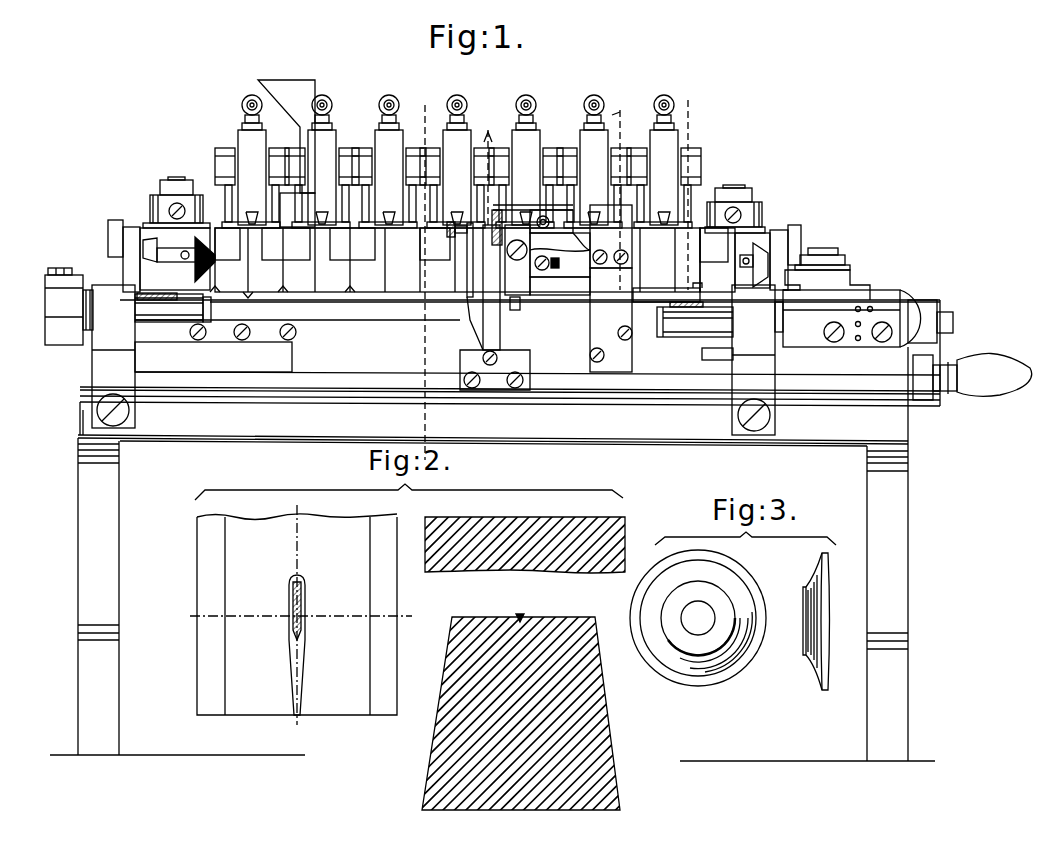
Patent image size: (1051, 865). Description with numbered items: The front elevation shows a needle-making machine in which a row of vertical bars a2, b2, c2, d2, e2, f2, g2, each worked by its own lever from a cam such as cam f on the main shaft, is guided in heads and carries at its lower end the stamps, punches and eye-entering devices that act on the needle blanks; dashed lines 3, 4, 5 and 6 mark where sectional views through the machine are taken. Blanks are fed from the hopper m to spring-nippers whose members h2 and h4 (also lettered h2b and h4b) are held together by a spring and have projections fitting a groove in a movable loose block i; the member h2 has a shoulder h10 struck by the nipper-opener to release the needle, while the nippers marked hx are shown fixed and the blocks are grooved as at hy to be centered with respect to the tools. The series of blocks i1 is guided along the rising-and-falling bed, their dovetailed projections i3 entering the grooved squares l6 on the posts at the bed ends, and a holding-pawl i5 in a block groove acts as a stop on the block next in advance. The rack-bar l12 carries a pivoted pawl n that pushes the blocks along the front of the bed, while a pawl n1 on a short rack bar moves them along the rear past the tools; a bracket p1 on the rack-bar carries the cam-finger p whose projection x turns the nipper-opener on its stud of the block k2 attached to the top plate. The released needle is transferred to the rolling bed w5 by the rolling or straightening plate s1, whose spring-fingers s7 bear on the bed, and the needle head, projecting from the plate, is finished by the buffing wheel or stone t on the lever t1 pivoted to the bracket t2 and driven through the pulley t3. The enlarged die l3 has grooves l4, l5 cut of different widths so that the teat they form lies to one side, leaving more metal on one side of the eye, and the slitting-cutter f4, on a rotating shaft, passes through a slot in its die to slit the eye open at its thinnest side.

In FIG. 1, the bar a2 is at (243, 128).
In FIG. 1, the bar b2 is at (332, 128).
In FIG. 1, the bar c2 is at (399, 128).
In FIG. 1, the bar d2 is at (467, 128).
In FIG. 1, the bar e2 is at (536, 128).
In FIG. 1, the bar f2 is at (585, 126).
In FIG. 1, the bar g2 is at (655, 126).
In FIG. 1, the hopper m is at (286, 153).
In FIG. 1, the section line 3 3 is at (431, 275).
In FIG. 1, the section line 4 4 is at (491, 170).
In FIG. 1, the section line 5 is at (624, 190).
In FIG. 1, the section line 6 is at (692, 187).
In FIG. 1, the cam f is at (610, 107).
In FIG. 1, the nipper member h2 is at (108, 238).
In FIG. 1, the nipper member h4 is at (801, 243).
In FIG. 1, the fixed nipper hx is at (495, 245).
In FIG. 1, the groove hy is at (332, 244).
In FIG. 1, the shoulder h10 is at (570, 230).
In FIG. 1, the pawl n is at (805, 323).
In FIG. 1, the pawl n1 is at (108, 287).
In FIG. 1, the block i1 is at (455, 262).
In FIG. 1, the block i is at (560, 286).
In FIG. 1, the dovetailed projection i3 is at (455, 262).
In FIG. 1, the holding-pawl i5 is at (648, 302).
In FIG. 1, the square l6 is at (455, 259).
In FIG. 2, the square l6 is at (305, 592).
In FIG. 1, the rack-bar l12 is at (310, 356).
In FIG. 1, the rolling or straightening plate s1 is at (512, 208).
In FIG. 1, the spring-fingers s7 is at (464, 242).
In FIG. 1, the block k2 is at (538, 215).
In FIG. 1, the needle-rolling bed w5 is at (505, 227).
In FIG. 1, the buffing wheel or stone t is at (517, 267).
In FIG. 1, the lever t1 is at (491, 287).
In FIG. 1, the bracket t2 is at (495, 343).
In FIG. 1, the pulley t3 is at (452, 238).
In FIG. 1, the cam-finger p is at (560, 255).
In FIG. 1, the bracket p1 is at (611, 288).
In FIG. 1, the projection x is at (575, 239).
In FIG. 1, the nipper member h4b is at (553, 265).
In FIG. 1, the nipper member h2b is at (575, 277).
In FIG. 2, the die l3 is at (200, 563).
In FIG. 2, the groove l4 is at (288, 598).
In FIG. 2, the groove l5 is at (305, 608).
In FIG. 3, the slitting-cutter f4 is at (806, 580).